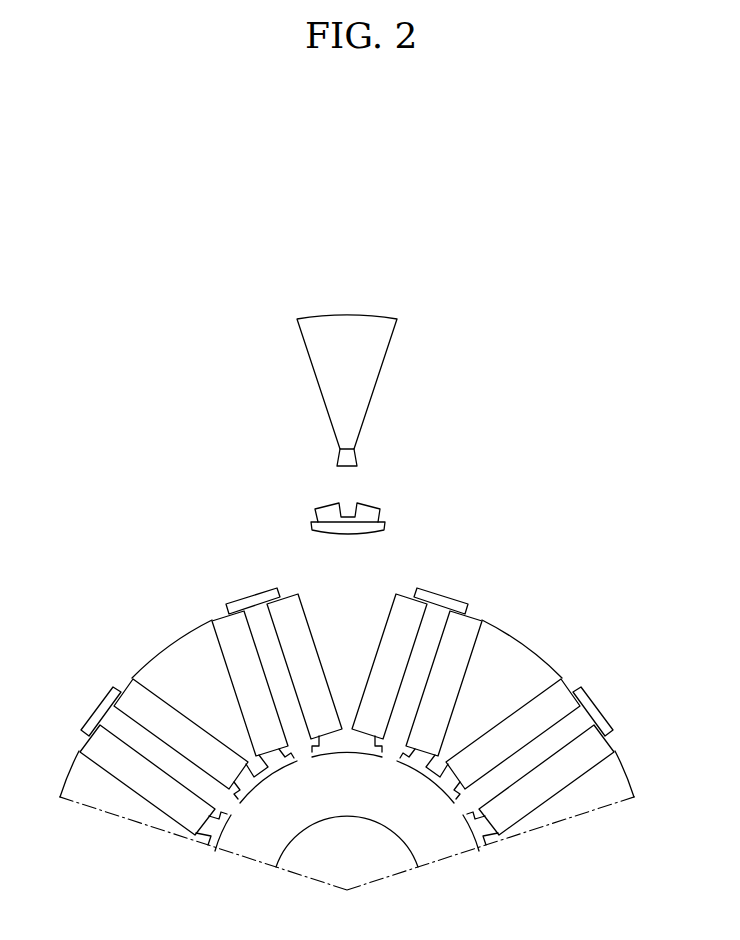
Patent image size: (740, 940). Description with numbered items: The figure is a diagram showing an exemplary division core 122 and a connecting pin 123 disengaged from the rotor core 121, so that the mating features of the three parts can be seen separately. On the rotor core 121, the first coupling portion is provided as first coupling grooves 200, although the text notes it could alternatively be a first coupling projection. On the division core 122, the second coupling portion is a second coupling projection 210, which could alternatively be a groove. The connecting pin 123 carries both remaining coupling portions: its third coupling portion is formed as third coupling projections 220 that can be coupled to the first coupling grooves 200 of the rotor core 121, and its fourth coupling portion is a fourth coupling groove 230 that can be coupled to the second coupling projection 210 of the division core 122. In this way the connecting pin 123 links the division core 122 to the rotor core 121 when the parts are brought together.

The first coupling grooves 200 is at (347, 755).
The rotor core 121 is at (263, 827).
The division core 122 is at (380, 390).
The connecting pin 123 is at (374, 524).
The second coupling projection 210 is at (352, 457).
The third coupling projections 220 is at (348, 535).
The fourth coupling groove 230 is at (348, 505).